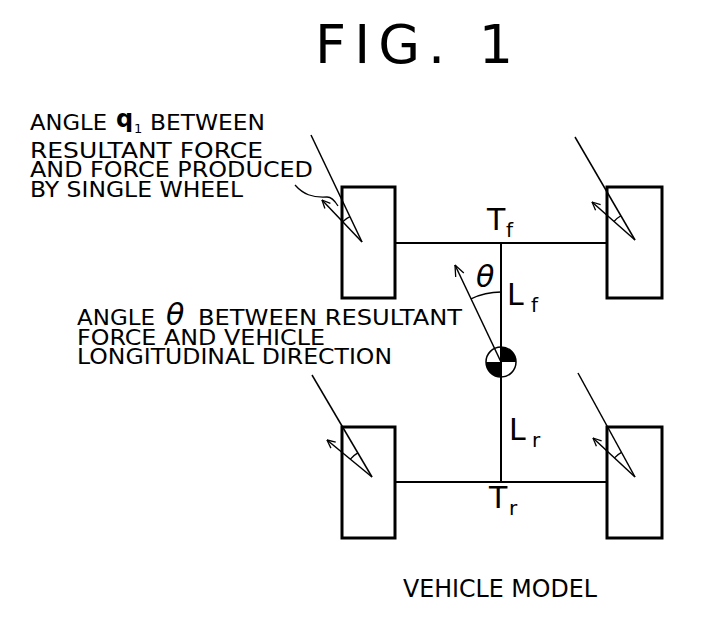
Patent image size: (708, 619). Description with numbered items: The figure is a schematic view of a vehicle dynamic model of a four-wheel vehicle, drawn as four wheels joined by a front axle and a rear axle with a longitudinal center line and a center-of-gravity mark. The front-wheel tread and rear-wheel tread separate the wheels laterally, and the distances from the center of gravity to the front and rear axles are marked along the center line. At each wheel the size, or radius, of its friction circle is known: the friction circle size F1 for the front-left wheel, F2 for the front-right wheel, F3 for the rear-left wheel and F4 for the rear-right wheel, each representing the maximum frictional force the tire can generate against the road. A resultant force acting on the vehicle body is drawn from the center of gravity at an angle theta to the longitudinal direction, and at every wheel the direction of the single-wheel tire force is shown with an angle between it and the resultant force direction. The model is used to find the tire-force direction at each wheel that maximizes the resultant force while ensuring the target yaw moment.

The friction circle size of first wheel F1 is at (428, 204).
The friction circle size of second wheel F2 is at (610, 238).
The friction circle size of third wheel F3 is at (348, 478).
The friction circle size of fourth wheel F4 is at (612, 477).